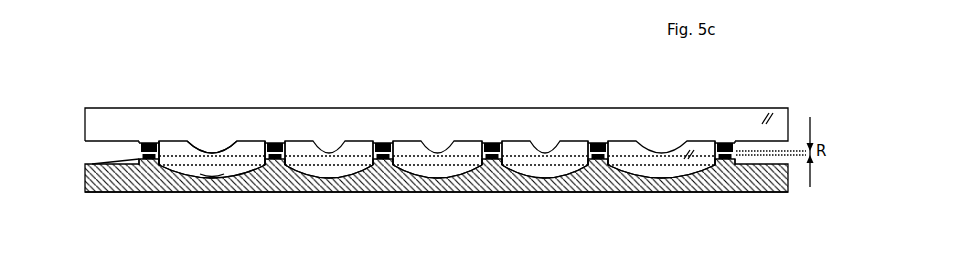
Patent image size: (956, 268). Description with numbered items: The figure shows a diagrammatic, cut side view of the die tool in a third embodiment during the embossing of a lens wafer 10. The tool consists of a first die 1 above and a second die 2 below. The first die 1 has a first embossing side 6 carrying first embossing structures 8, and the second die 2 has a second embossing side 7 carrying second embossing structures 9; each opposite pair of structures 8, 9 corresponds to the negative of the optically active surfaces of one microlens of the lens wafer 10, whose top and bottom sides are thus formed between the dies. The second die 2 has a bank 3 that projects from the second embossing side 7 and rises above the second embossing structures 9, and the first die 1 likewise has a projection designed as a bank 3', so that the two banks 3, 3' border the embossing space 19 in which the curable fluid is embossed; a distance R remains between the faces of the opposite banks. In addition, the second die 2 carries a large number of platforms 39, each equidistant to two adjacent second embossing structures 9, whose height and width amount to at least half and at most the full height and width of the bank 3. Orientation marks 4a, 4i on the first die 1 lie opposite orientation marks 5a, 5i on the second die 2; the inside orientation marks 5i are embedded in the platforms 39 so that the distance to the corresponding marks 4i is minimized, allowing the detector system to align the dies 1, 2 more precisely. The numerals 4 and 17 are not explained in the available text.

The first die 1 is at (158, 65).
The second die 2 is at (593, 238).
The bank 3 is at (423, 175).
The bank 3' is at (435, 109).
The lens element 4 is at (149, 160).
The orientation mark 4a is at (145, 144).
The inside orientation mark 4i is at (594, 142).
The second orientation mark 5a is at (724, 161).
The inside orientation mark 5i is at (583, 172).
The first embossing side 6 is at (394, 150).
The second embossing side 7 is at (267, 165).
The first embossing structures 8 is at (219, 153).
The second embossing structures 9 is at (220, 178).
The lens wafer 10 is at (610, 142).
The adhesive layer 17 is at (142, 155).
The embossing space 19 is at (658, 163).
The platform 39 is at (265, 140).